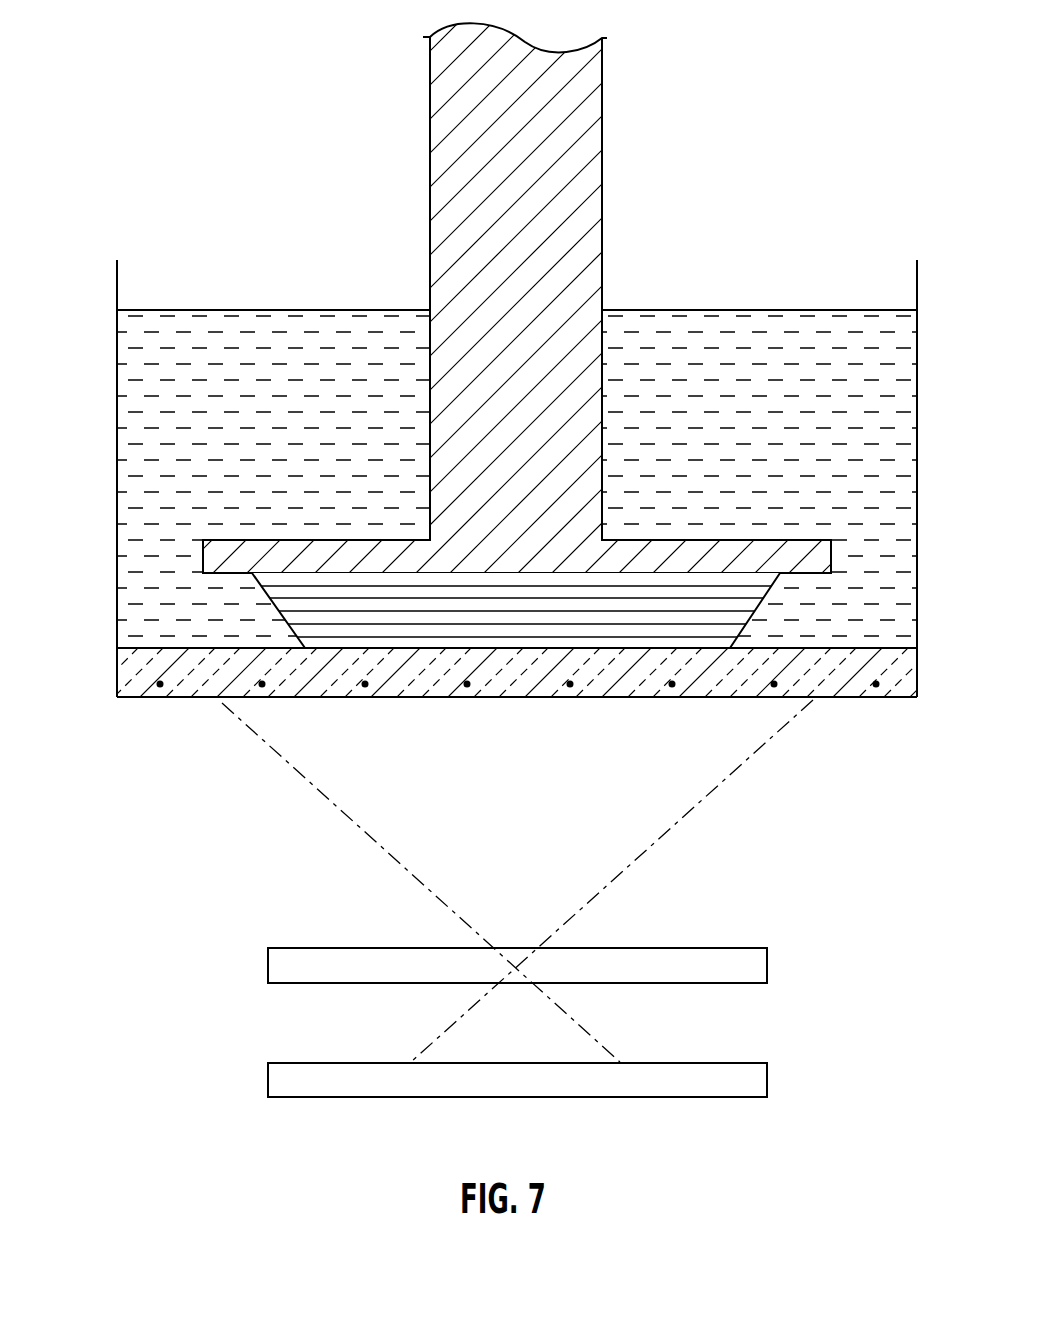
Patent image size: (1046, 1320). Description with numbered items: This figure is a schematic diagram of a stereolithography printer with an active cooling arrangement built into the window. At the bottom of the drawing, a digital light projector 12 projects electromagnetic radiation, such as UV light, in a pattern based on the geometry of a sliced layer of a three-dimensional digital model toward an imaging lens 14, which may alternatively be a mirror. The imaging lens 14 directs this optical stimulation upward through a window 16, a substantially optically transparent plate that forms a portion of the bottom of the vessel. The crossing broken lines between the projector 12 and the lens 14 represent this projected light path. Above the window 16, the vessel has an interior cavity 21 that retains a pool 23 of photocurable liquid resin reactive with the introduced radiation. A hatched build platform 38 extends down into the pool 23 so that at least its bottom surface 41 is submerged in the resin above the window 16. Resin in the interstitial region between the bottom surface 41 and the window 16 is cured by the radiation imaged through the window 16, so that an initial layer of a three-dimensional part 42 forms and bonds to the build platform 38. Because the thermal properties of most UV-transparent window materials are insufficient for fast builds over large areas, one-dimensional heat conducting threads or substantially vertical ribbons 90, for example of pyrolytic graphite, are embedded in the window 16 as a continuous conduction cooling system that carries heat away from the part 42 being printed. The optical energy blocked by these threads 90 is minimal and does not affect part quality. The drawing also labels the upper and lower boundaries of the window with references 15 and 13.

The digital light projector 12 is at (767, 1080).
The imaging lens 14 is at (767, 962).
The bottom surface of substrate 13 is at (143, 697).
The top surface of substrate 15 is at (140, 648).
The window 16 is at (130, 678).
The interior cavity 21 is at (118, 427).
The pool 23 is at (133, 361).
The build platform 38 is at (818, 540).
The bottom surface 41 is at (805, 573).
The 3D part 42 is at (698, 640).
The heat conducting threads or substantially vertical ribbons 90 is at (162, 686).